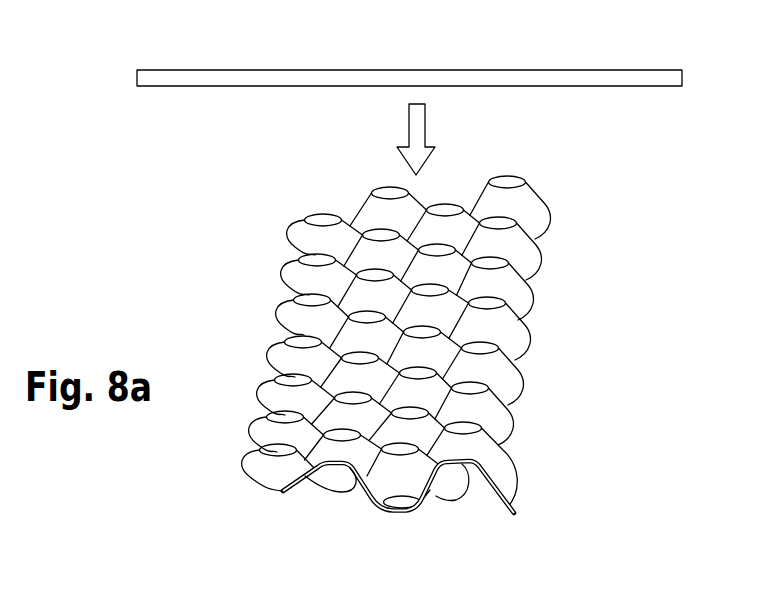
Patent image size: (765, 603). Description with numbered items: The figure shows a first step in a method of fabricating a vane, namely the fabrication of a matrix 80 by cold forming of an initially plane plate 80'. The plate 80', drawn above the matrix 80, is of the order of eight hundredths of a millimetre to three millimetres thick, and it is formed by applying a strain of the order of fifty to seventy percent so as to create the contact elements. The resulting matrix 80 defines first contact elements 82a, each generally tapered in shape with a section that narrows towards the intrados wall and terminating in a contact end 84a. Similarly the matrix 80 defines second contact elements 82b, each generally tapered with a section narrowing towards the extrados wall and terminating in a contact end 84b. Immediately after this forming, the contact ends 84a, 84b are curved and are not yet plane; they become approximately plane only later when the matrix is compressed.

The matrix 80 is at (351, 349).
The initially plane plate 80' is at (409, 47).
The first contact elements 82a is at (282, 353).
The contact ends of the first contact elements 84a is at (380, 231).
The second contact elements 82b is at (460, 497).
The contact ends of the second contact elements 84b is at (512, 516).